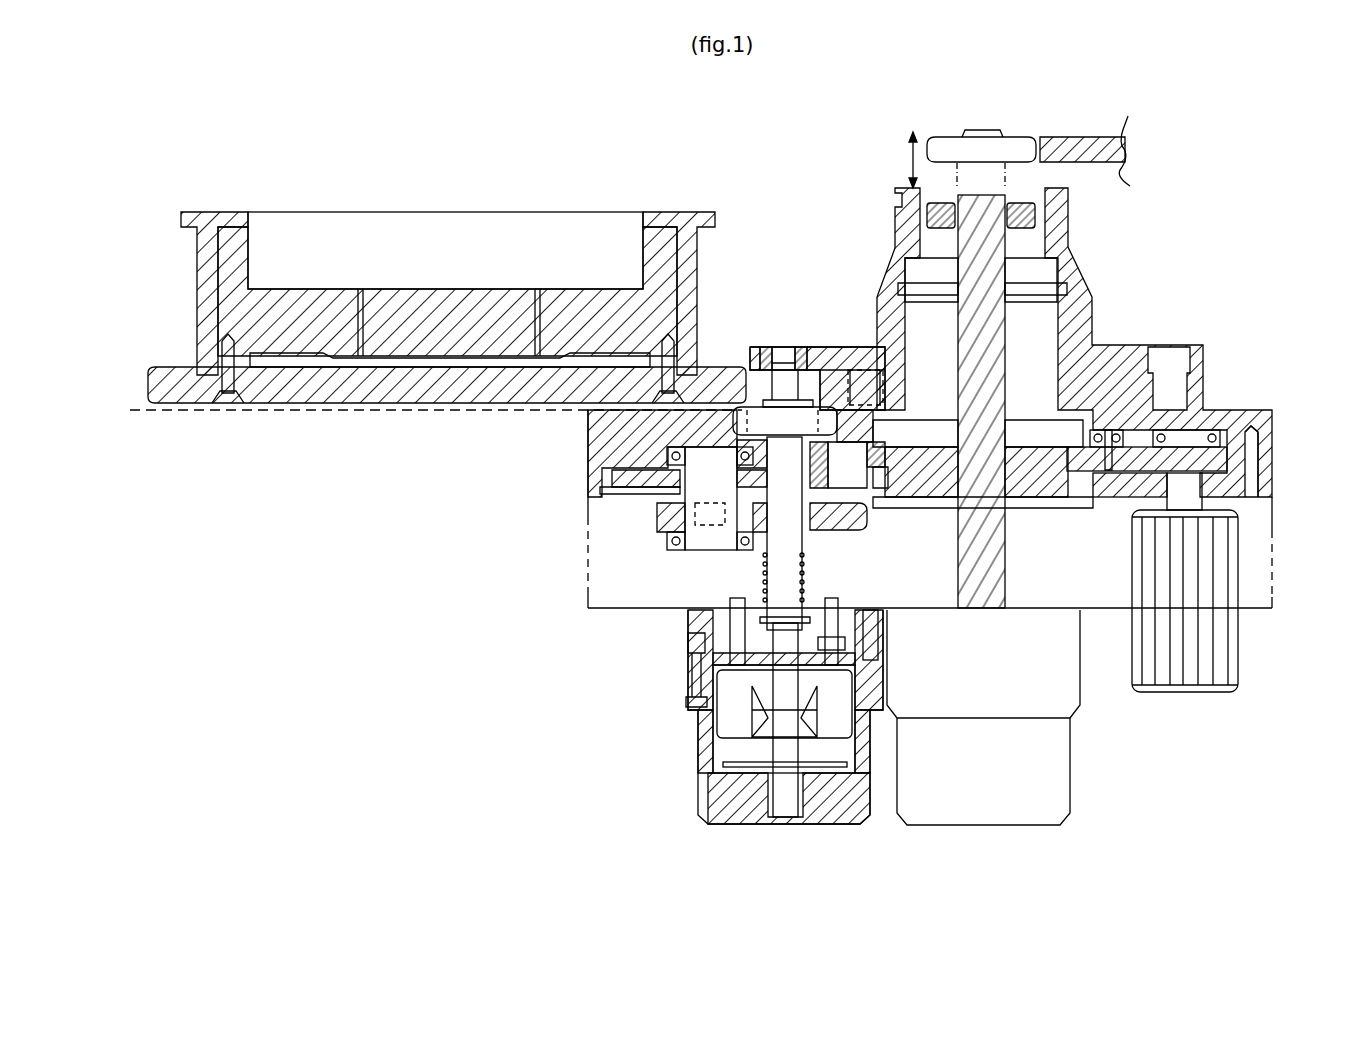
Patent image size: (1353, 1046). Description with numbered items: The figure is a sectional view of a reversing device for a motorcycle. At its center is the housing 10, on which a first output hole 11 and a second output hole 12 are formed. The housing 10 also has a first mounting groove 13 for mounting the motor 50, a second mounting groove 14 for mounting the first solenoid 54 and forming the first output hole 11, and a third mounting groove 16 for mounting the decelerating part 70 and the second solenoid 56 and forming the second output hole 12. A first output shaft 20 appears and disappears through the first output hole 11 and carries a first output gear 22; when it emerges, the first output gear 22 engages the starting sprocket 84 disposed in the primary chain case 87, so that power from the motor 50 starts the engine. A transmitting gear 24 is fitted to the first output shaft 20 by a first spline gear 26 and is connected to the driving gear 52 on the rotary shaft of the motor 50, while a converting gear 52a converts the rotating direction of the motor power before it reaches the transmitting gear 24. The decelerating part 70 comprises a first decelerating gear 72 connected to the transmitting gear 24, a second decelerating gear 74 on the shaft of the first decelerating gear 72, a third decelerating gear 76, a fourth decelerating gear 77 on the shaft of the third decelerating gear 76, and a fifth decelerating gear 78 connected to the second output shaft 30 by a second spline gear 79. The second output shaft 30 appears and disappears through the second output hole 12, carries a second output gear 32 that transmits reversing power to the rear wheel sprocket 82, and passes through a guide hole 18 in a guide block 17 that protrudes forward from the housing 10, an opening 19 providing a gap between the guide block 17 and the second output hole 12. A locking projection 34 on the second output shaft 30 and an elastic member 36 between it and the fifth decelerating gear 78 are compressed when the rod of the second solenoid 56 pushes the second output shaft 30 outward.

The housing 10 is at (598, 434).
The first output hole 11 is at (932, 196).
The second output hole 12 is at (730, 418).
The first mounting groove 13 is at (1252, 480).
The second mounting groove 14 is at (1075, 410).
The third mounting groove 16 is at (612, 502).
The guide block 17 is at (812, 352).
The guide hole 18 is at (791, 346).
The opening 19 is at (838, 400).
The first output shaft 20 is at (985, 270).
The first output gear 22 is at (1000, 216).
The transmitting gear 24 is at (1040, 462).
The first spline gear 26 is at (1017, 433).
The second output shaft 30 is at (778, 387).
The second output gear 32 is at (860, 406).
The locking projection 34 is at (762, 663).
The elastic member 36 is at (692, 661).
The motor 50 is at (1222, 663).
The driving gear 52 is at (1228, 460).
The converting gear 52a is at (1132, 458).
The first solenoid 54 is at (1055, 773).
The second solenoid 56 is at (740, 824).
The decelerating part 70 is at (648, 505).
The first decelerating gear 72 is at (905, 485).
The second decelerating gear 74 is at (907, 452).
The third decelerating gear 76 is at (612, 478).
The fourth decelerating gear 77 is at (657, 526).
The fifth decelerating gear 78 is at (873, 517).
The second spline gear 79 is at (780, 557).
The rear wheel sprocket 82 is at (333, 400).
The starting sprocket 84 is at (1085, 140).
The primary chain case 87 is at (237, 414).